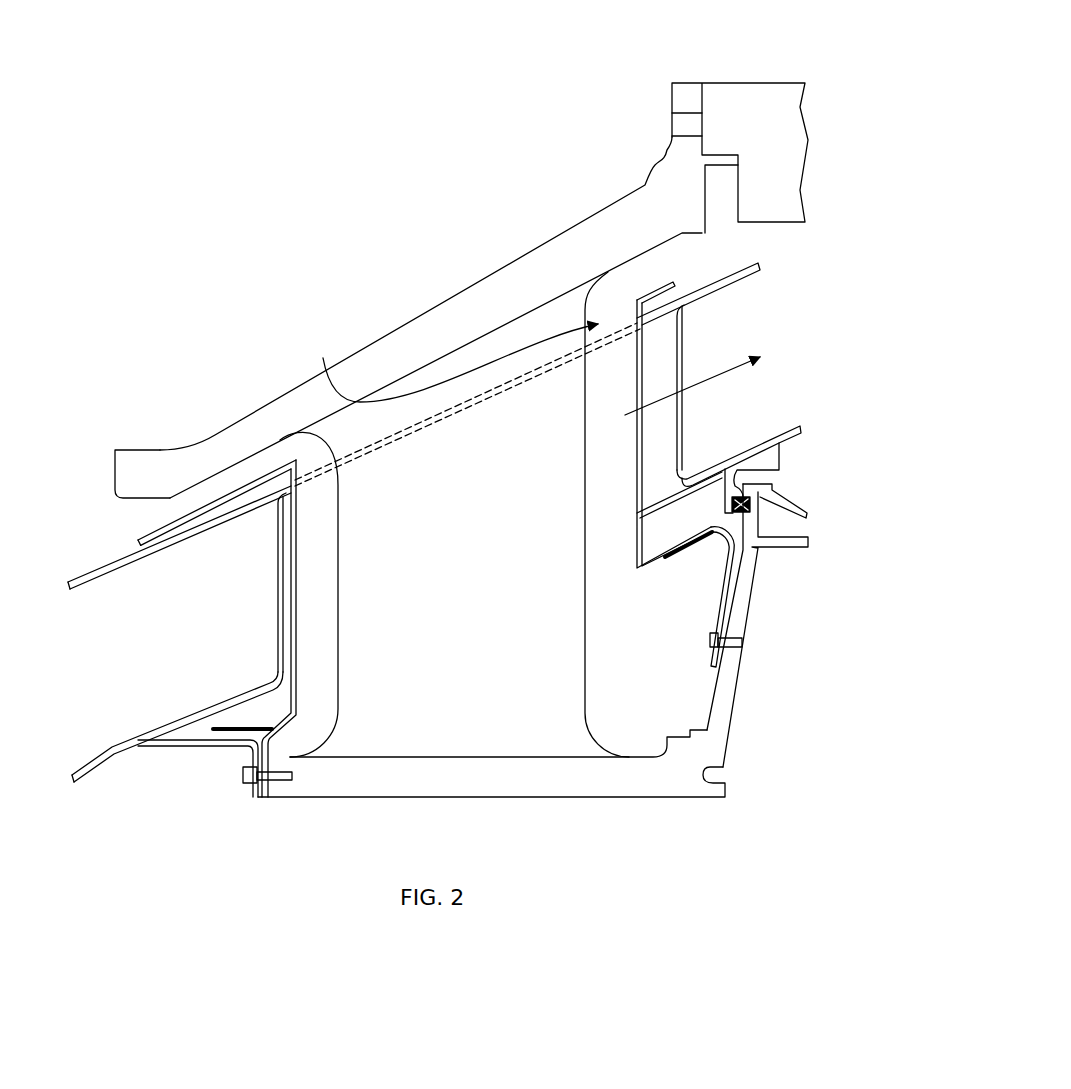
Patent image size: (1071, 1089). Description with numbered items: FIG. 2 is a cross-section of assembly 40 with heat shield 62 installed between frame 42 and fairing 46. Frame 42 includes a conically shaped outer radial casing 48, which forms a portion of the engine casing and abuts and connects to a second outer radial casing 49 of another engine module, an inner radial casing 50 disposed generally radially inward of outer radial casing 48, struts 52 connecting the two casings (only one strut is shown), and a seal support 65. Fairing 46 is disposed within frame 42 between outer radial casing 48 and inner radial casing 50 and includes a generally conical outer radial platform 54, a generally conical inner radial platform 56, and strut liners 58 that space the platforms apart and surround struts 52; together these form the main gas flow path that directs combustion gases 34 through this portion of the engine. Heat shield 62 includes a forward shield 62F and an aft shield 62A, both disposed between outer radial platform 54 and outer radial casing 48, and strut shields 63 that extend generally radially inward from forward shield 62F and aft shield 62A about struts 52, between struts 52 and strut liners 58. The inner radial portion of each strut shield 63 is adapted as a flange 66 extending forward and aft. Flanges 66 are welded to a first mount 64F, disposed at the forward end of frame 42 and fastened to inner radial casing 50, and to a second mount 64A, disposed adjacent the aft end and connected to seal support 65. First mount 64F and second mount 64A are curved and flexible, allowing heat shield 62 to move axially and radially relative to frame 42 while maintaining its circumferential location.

The combustion gases 34 is at (657, 398).
The assembly 40 is at (262, 215).
The frame 42 is at (457, 252).
The fairing 46 is at (96, 552).
The outer radial casing 48 is at (143, 463).
The second outer radial casing 49 is at (738, 100).
The inner radial casing 50 is at (445, 797).
The struts 52 is at (583, 687).
The outer radial platform 54 is at (737, 278).
The inner radial platform 56 is at (165, 725).
The strut liners 58 is at (282, 586).
The heat shield 62 is at (318, 443).
The forward shield 62F is at (170, 520).
The aft shield 62A is at (675, 282).
The strut shields 63 is at (293, 557).
The first mount 64F is at (305, 732).
The second mount 64A is at (716, 551).
The seal support 65 is at (733, 593).
The flanges 66 is at (242, 730).